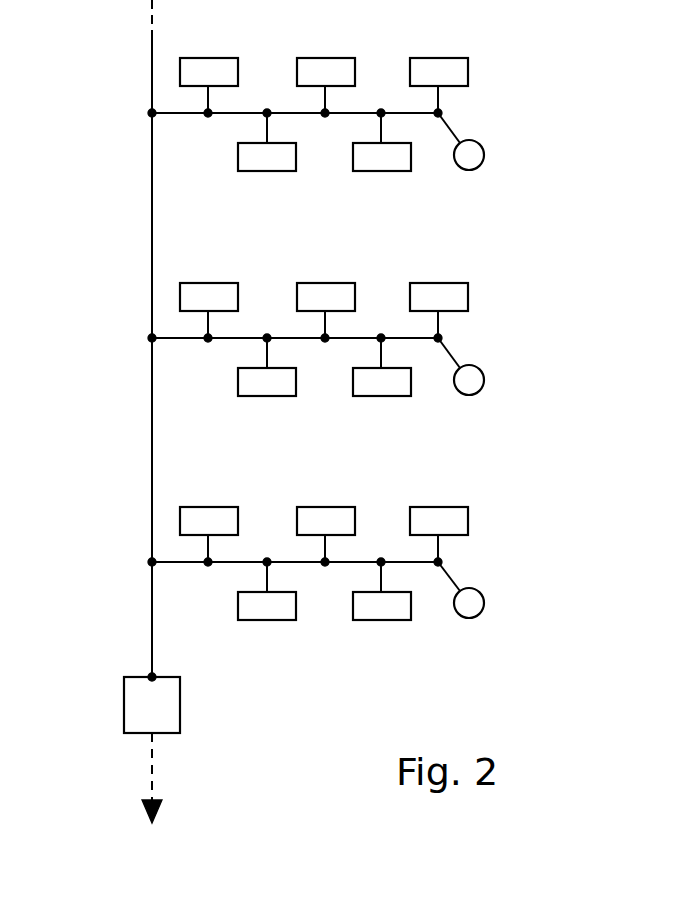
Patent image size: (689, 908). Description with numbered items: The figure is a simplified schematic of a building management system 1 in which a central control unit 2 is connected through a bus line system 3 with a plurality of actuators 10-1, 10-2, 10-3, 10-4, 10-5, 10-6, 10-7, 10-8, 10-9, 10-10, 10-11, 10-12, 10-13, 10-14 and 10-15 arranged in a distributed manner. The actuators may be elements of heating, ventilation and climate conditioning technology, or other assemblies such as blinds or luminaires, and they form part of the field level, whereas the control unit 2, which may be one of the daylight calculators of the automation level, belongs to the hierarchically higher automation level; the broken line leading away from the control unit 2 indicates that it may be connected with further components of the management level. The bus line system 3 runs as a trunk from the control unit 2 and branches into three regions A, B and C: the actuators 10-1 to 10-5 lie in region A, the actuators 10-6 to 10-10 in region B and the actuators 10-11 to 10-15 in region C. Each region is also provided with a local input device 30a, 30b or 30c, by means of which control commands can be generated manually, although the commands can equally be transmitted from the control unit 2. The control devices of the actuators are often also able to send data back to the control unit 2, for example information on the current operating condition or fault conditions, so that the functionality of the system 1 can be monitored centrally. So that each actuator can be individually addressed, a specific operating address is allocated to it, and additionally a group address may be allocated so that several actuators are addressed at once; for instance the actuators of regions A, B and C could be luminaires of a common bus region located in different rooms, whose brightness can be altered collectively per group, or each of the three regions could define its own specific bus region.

The building management system 1 is at (86, 580).
The control unit 2 is at (160, 720).
The bus line system 3 is at (152, 437).
The actuator 10-1 is at (214, 58).
The actuator 10-2 is at (327, 58).
The actuator 10-3 is at (441, 58).
The actuator 10-4 is at (262, 171).
The actuator 10-5 is at (376, 171).
The actuator 10-6 is at (214, 283).
The actuator 10-7 is at (327, 283).
The actuator 10-8 is at (441, 283).
The actuator 10-9 is at (262, 396).
The actuator 10-10 is at (376, 396).
The actuator 10-11 is at (214, 507).
The actuator 10-12 is at (327, 507).
The actuator 10-13 is at (441, 507).
The actuator 10-14 is at (262, 620).
The actuator 10-15 is at (376, 620).
The local input device 30a is at (484, 155).
The local input device 30b is at (484, 380).
The local input device 30c is at (484, 603).
The region A is at (496, 108).
The region B is at (496, 333).
The region C is at (496, 557).